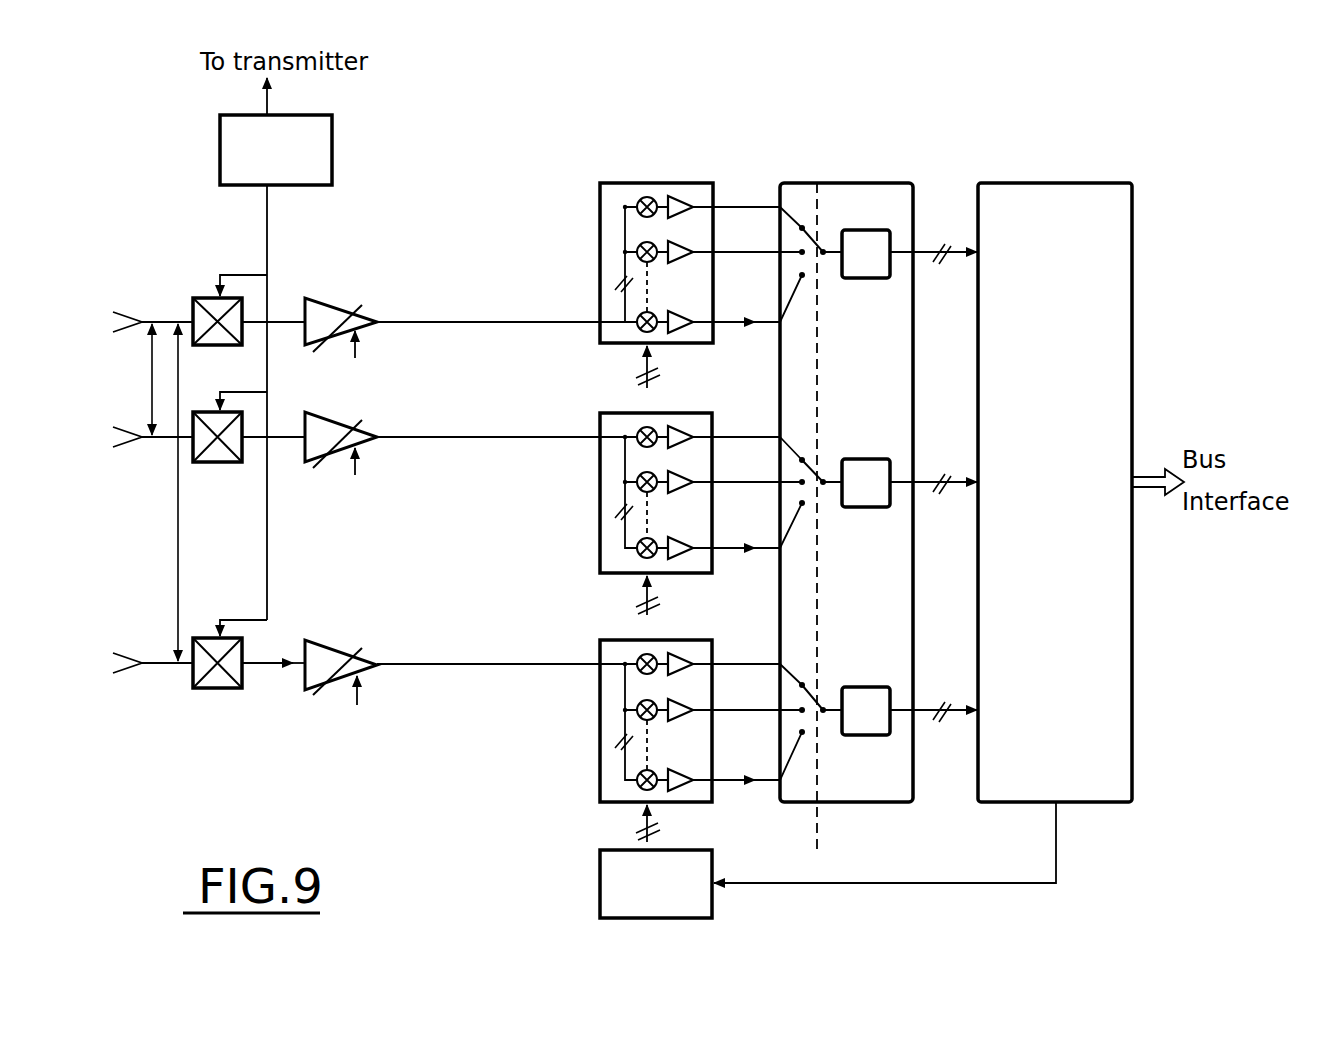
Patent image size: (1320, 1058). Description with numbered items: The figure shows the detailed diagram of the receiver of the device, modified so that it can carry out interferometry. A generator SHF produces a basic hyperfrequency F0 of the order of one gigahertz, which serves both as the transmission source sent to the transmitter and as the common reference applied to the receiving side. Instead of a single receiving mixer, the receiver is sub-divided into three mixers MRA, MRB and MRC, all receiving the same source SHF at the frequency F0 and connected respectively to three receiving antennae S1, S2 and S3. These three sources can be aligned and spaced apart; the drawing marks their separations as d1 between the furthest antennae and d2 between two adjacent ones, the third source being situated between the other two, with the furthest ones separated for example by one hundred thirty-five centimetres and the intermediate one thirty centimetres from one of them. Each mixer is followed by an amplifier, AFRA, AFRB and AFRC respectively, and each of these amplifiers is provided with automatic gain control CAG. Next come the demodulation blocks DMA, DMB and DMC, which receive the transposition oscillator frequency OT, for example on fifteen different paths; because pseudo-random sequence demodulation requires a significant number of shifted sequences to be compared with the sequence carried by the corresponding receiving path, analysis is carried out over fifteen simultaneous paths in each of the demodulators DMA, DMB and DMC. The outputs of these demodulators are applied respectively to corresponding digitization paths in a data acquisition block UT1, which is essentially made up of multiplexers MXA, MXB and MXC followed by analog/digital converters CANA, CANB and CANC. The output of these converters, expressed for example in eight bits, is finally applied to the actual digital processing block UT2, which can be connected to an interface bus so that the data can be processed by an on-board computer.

The transmission source SHF is at (333, 150).
The basic hyperfrequency F0 is at (283, 402).
The receiving antenna S1 is at (138, 324).
The receiving antenna S2 is at (138, 439).
The receiving antenna S3 is at (138, 665).
The distance between sensors 1 and 3 d1 is at (160, 492).
The distance between sensors 1 and 2 d2 is at (133, 379).
The mixer MRA is at (203, 297).
The mixer MRB is at (232, 462).
The mixer MRC is at (225, 688).
The amplifier AFRA is at (352, 308).
The amplifier AFRB is at (345, 422).
The amplifier AFRC is at (391, 610).
The automatic gain control CAG is at (375, 532).
The demodulation block DMA is at (600, 218).
The demodulation block DMB is at (600, 487).
The demodulation block DMC is at (600, 698).
The data acquisition block UT1 is at (878, 183).
The digital processing block UT2 is at (1083, 183).
The multiplexer MXA is at (814, 242).
The multiplexer MXB is at (822, 478).
The multiplexer MXC is at (823, 702).
The analog/digital converter CANA is at (892, 236).
The analog/digital converter CANB is at (892, 464).
The analog/digital converter CANC is at (892, 692).
The transposition oscillator OT is at (600, 879).